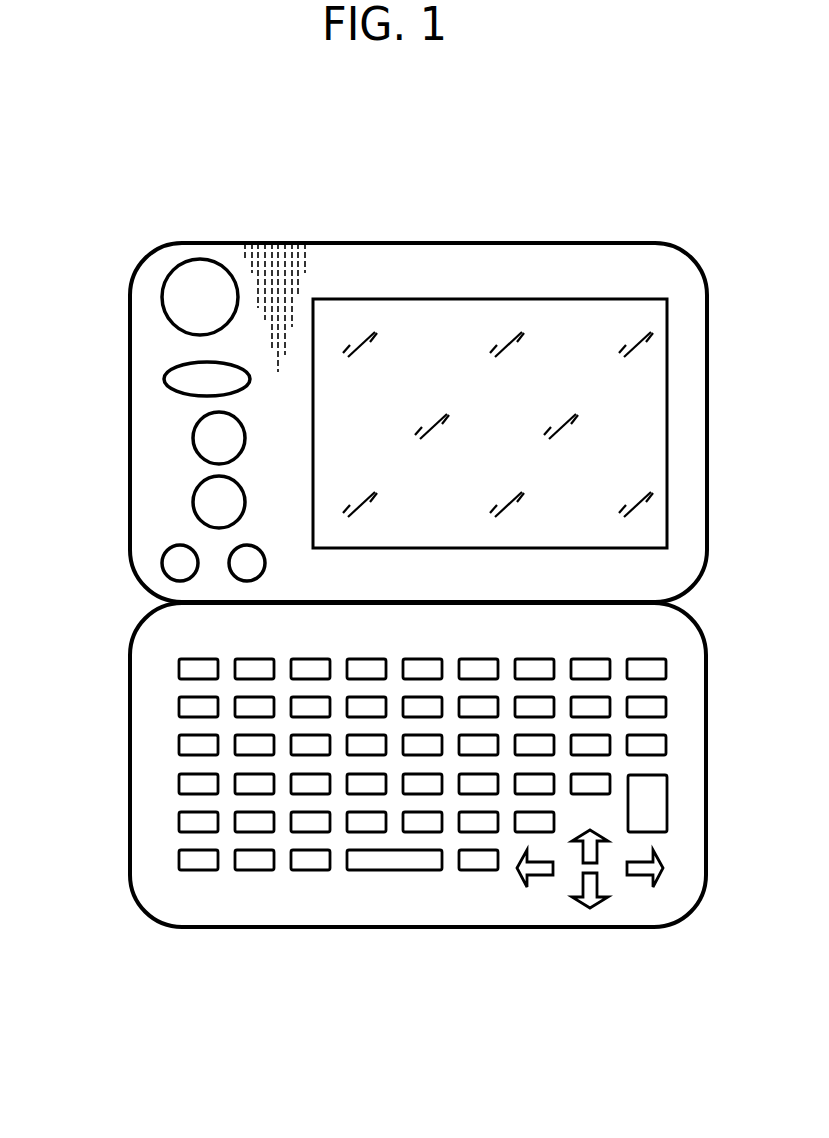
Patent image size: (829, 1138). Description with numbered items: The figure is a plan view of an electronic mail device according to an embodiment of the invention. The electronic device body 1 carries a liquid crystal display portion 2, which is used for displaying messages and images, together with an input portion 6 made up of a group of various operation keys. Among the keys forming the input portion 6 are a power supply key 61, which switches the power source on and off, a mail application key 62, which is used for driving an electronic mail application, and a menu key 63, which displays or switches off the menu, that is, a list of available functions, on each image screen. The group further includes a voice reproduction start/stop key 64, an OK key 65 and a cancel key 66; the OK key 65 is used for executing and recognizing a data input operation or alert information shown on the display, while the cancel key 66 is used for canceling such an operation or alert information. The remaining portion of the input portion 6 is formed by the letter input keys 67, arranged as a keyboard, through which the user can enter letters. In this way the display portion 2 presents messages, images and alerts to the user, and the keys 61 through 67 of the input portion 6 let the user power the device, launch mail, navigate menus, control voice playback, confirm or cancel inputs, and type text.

The electronic device body 1 is at (480, 200).
The liquid crystal display portion 2 is at (638, 388).
The input portion 6 is at (72, 284).
The power supply key 61 is at (181, 303).
The mail application key 62 is at (181, 381).
The menu key 63 is at (207, 437).
The voice reproduction start/stop key 64 is at (207, 497).
The OK key 65 is at (170, 556).
The cancel key 66 is at (237, 570).
The letter input keys 67 is at (180, 740).